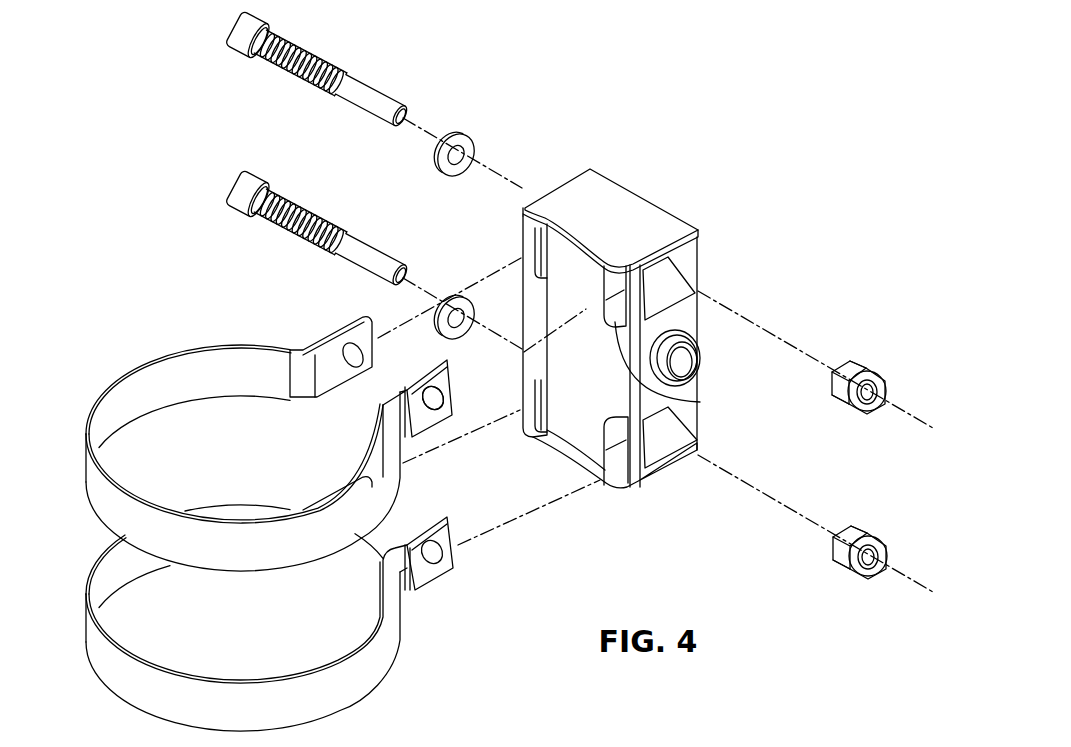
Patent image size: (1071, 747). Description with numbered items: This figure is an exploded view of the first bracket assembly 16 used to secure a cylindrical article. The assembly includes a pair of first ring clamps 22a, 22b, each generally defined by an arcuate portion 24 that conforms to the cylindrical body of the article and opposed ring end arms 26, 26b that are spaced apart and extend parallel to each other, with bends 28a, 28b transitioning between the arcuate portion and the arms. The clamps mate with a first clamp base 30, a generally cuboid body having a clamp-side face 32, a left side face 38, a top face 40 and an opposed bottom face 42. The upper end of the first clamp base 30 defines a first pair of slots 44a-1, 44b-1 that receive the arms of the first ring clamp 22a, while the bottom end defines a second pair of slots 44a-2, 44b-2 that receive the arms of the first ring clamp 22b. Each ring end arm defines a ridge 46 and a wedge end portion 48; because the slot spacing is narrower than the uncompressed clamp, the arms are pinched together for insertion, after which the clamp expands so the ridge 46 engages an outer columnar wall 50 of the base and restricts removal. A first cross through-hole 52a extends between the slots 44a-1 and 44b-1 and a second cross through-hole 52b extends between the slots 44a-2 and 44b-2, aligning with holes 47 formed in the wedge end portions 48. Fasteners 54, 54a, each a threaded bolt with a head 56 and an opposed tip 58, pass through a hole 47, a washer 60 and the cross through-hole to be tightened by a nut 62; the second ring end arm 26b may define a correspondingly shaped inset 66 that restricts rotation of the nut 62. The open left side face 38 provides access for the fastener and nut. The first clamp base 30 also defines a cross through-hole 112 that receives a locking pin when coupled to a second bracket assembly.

The first bracket assembly 16 is at (656, 108).
The first ring clamp 22a is at (86, 462).
The first ring clamp 22b is at (249, 604).
The arcuate portion 24 is at (261, 418).
The ring end arm 26 is at (304, 355).
The ring end arm 26b is at (411, 406).
The bend 28a is at (292, 400).
The bend 28b is at (385, 410).
The first clamp base 30 is at (609, 340).
The clamp-side face 32 is at (562, 430).
The left side face 38 is at (690, 318).
The top face 40 is at (632, 210).
The bottom face 42 is at (563, 465).
The first slot 44a-1 is at (520, 252).
The first slot 44a-2 is at (535, 426).
The second slot 44b-1 is at (652, 406).
The second slot 44b-2 is at (618, 472).
The ridge 46 is at (432, 388).
The hole 47 is at (351, 343).
The wedge end portion 48 is at (447, 422).
The outer columnar wall 50 is at (518, 229).
The first cross through-hole 52a is at (648, 268).
The second cross through-hole 52b is at (648, 431).
The fastener 54 is at (372, 82).
The fastener 54a is at (372, 250).
The head 56 is at (240, 46).
The tip 58 is at (404, 110).
The washer 60 is at (463, 131).
The nut 62 is at (870, 366).
The inset 66 is at (440, 574).
The cross through-hole 112 is at (702, 358).